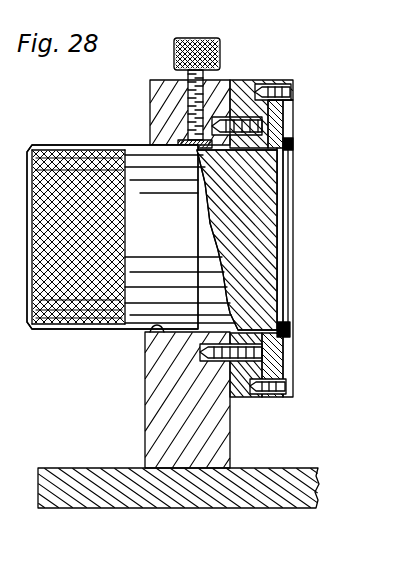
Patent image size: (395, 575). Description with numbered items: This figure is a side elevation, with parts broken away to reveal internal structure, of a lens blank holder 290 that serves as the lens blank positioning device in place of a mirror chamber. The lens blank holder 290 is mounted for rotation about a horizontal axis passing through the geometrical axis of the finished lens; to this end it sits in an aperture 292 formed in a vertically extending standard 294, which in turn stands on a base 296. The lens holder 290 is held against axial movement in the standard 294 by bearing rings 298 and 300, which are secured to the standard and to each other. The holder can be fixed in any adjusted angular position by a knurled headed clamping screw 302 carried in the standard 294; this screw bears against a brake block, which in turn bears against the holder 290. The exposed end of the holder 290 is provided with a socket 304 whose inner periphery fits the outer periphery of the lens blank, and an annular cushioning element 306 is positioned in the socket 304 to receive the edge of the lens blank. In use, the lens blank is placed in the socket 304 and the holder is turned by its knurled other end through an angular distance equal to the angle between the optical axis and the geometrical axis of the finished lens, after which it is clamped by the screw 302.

The lens blank holder 290 is at (143, 165).
The aperture 292 is at (155, 333).
The standard 294 is at (150, 413).
The base 296 is at (198, 488).
The bearing ring 298 is at (242, 92).
The bearing ring 300 is at (283, 108).
The knurled headed clamping screw 302 is at (176, 50).
The socket 304 is at (290, 148).
The annular cushioning element 306 is at (290, 330).